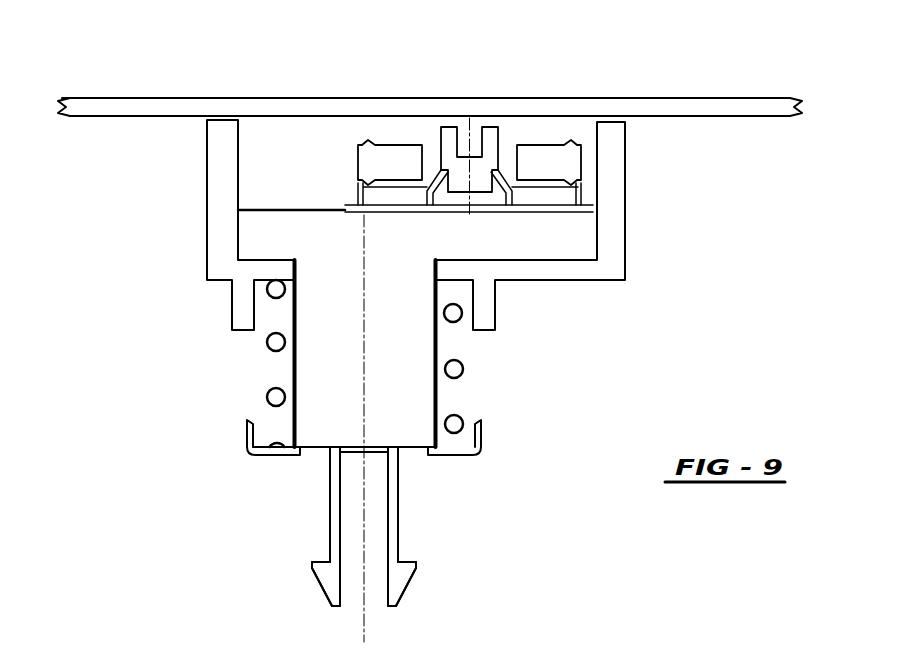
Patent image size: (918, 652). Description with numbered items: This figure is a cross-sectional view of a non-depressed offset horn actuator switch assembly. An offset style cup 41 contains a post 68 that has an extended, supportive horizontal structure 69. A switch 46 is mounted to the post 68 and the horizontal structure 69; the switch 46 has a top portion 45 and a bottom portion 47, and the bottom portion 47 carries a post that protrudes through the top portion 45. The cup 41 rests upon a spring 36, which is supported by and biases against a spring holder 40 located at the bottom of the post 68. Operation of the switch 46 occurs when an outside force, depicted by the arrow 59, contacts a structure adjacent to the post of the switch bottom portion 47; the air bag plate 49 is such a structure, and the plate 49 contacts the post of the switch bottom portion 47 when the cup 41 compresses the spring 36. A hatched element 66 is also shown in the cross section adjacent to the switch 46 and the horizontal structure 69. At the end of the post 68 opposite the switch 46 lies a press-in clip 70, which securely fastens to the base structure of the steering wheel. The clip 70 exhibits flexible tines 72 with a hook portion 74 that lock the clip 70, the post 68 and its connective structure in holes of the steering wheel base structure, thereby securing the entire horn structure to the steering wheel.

The spring 36 is at (462, 364).
The spring holder 40 is at (252, 453).
The offset horn actuator cup 41 is at (626, 160).
The top portion of switch 45 is at (364, 150).
The switch 46 is at (337, 177).
The bottom portion of switch 47 is at (503, 137).
The air bag plate 49 is at (623, 97).
The arrow 59 is at (237, 97).
The nut plate 66 is at (592, 207).
The post 68 is at (403, 349).
The horizontal structure 69 is at (543, 241).
The clip 70 is at (453, 504).
The tines 72 is at (398, 607).
The hook portion 74 is at (413, 561).